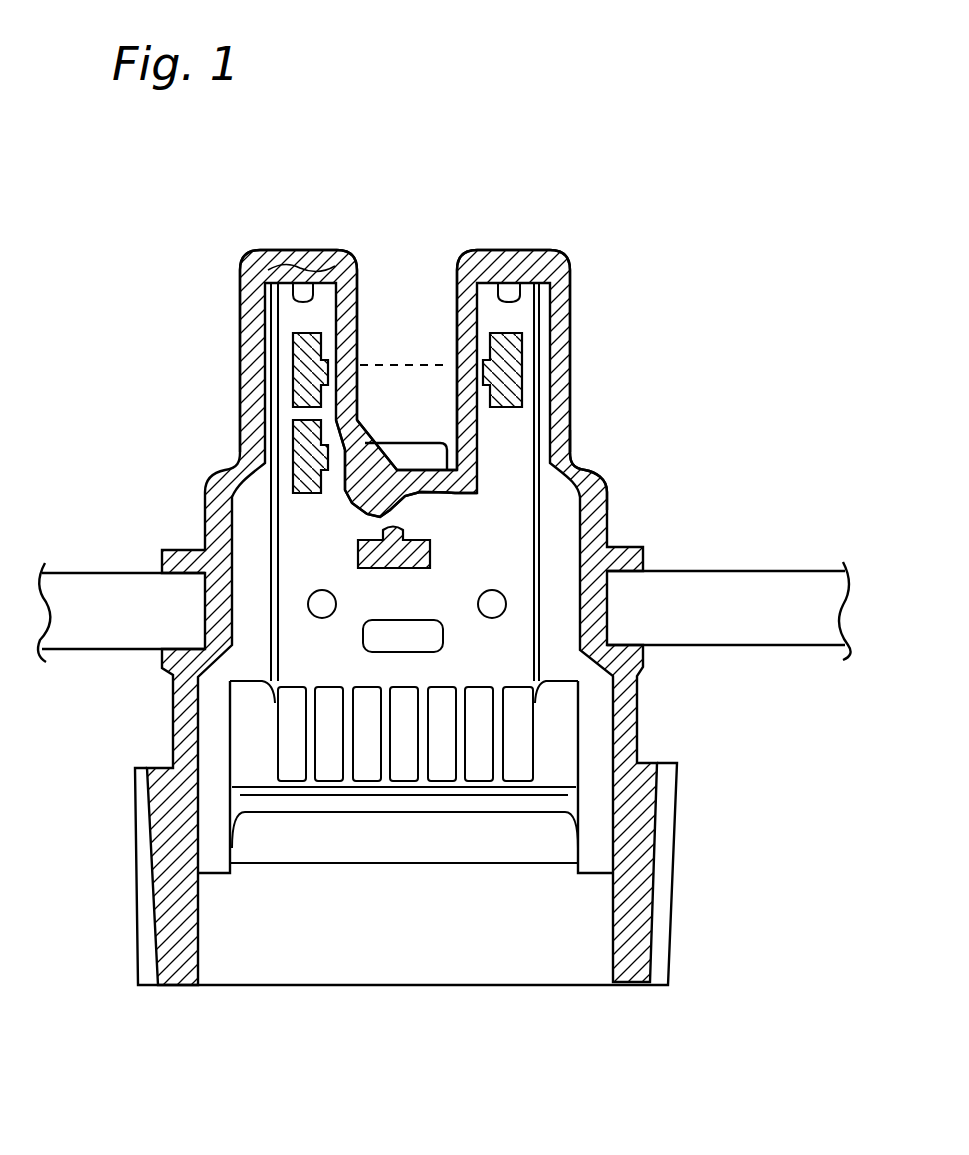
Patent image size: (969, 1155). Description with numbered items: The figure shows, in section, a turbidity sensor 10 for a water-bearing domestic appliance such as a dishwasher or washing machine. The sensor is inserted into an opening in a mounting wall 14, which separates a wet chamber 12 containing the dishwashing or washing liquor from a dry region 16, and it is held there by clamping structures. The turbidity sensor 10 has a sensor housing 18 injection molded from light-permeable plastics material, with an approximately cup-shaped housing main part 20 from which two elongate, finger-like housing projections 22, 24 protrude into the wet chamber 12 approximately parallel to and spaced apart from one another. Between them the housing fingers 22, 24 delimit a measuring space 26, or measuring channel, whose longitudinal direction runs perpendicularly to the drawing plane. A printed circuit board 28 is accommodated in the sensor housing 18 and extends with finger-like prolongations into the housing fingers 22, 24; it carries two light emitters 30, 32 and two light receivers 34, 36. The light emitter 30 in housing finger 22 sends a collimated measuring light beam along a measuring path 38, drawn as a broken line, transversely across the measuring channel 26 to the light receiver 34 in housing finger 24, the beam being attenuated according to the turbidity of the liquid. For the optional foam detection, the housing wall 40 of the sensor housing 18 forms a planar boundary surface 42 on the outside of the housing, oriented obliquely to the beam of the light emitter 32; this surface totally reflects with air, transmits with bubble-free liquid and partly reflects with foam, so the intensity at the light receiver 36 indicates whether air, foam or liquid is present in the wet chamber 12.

The turbidity sensor 10 is at (668, 385).
The wet chamber 12 is at (768, 173).
The mounting wall 14 is at (800, 648).
The dry region 16 is at (842, 905).
The sensor housing 18 is at (607, 522).
The housing main part 20 is at (639, 737).
The housing projection 22 is at (250, 252).
The housing projection 24 is at (562, 252).
The measuring space 26 is at (442, 313).
The printed circuit board 28 is at (293, 554).
The light emitter 30 is at (293, 360).
The light emitter 32 is at (293, 446).
The light receiver 34 is at (520, 366).
The light receiver 36 is at (400, 571).
The measuring path 38 is at (390, 363).
The housing wall 40 is at (583, 455).
The boundary surface 42 is at (395, 460).